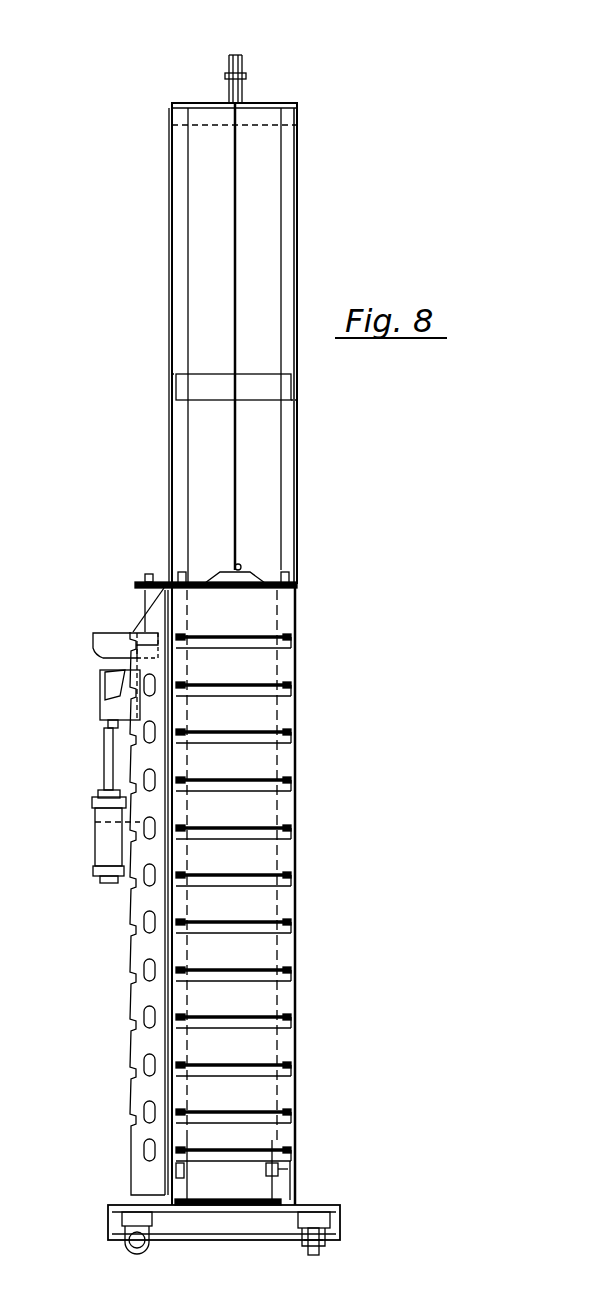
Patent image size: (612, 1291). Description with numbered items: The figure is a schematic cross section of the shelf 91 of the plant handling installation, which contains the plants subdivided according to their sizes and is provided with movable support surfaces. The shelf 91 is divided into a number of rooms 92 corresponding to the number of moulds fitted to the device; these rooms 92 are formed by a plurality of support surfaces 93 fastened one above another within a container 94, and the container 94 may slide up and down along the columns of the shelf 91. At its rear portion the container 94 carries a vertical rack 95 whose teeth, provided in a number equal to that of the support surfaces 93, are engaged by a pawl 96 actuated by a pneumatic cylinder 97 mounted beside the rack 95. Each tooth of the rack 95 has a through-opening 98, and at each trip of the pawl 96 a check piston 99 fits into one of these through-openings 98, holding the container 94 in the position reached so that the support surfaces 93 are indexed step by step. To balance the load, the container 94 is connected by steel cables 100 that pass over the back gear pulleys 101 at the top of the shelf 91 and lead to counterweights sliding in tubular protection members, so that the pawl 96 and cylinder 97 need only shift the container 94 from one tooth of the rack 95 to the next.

The shelf 91 is at (262, 498).
The rooms 92 is at (256, 664).
The support surfaces 93 is at (252, 688).
The container 94 is at (258, 583).
The vertical rack 95 is at (133, 1008).
The pawl 96 is at (100, 657).
The pneumatic cylinder 97 is at (105, 838).
The through-opening 98 is at (147, 922).
The check piston 99 is at (115, 692).
The steel cables 100 is at (258, 267).
The back gear pulleys 101 is at (246, 88).